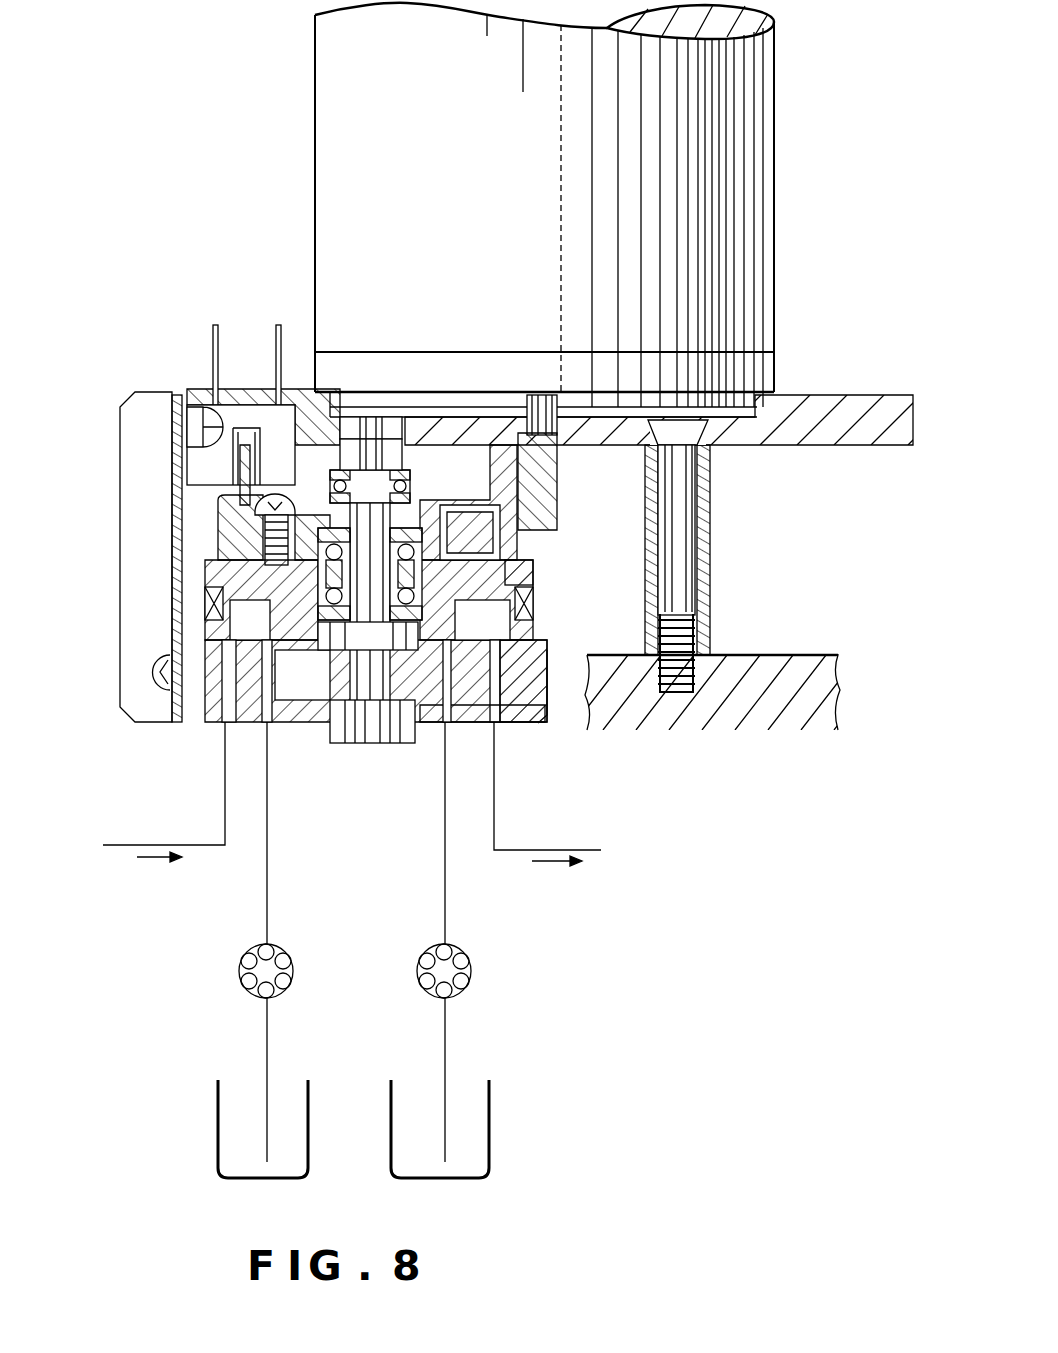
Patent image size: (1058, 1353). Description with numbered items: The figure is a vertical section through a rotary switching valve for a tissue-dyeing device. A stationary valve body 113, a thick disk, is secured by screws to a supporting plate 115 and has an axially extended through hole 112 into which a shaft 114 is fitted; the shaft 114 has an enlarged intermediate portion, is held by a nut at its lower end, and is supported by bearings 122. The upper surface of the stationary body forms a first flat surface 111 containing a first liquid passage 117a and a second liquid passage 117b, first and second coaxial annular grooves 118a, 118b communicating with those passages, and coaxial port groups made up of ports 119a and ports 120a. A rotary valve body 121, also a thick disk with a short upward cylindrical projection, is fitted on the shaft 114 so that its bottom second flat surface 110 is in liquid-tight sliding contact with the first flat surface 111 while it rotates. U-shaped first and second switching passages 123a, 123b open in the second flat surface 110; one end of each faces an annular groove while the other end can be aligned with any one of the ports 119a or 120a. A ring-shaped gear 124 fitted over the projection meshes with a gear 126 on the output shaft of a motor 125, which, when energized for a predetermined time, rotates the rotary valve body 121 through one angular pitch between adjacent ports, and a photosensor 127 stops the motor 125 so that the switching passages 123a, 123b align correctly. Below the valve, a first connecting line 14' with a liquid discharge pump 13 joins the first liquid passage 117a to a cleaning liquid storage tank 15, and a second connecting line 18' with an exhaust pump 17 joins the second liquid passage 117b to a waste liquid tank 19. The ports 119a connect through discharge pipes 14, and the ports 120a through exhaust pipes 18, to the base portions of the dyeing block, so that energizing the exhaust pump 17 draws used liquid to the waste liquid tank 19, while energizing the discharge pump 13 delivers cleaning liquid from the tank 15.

The motor 125 is at (779, 191).
The photosensor 127 is at (248, 415).
The supporting plate 115 is at (135, 530).
The shaft 114 is at (320, 520).
The gear 126 is at (552, 496).
The ring-shaped gear 124 is at (520, 556).
The rotary valve body 121 is at (520, 590).
The bearings 122 is at (468, 503).
The first switching passage 123a is at (535, 606).
The second switching passage 123b is at (215, 600).
The first annular groove 118a is at (500, 640).
The second annular groove 118b is at (302, 675).
The second flat surface 110 is at (220, 660).
The first flat surface 111 is at (537, 681).
The through hole 112 is at (412, 735).
The first liquid passage 117a is at (447, 723).
The second liquid passage 117b is at (268, 723).
The ports of the first port group 119a is at (495, 723).
The ports of the second port group 120a is at (216, 724).
The stationary valve body 113 is at (525, 720).
The exhaust pipes 18 is at (158, 792).
The discharge pipes 14 is at (547, 794).
The second connecting line 18' is at (296, 942).
The first connecting line 14' is at (470, 942).
The exhaust pump 17 is at (290, 985).
The liquid discharge pump 13 is at (468, 986).
The waste liquid tank 19 is at (217, 1124).
The cleaning liquid storage tank 15 is at (489, 1126).